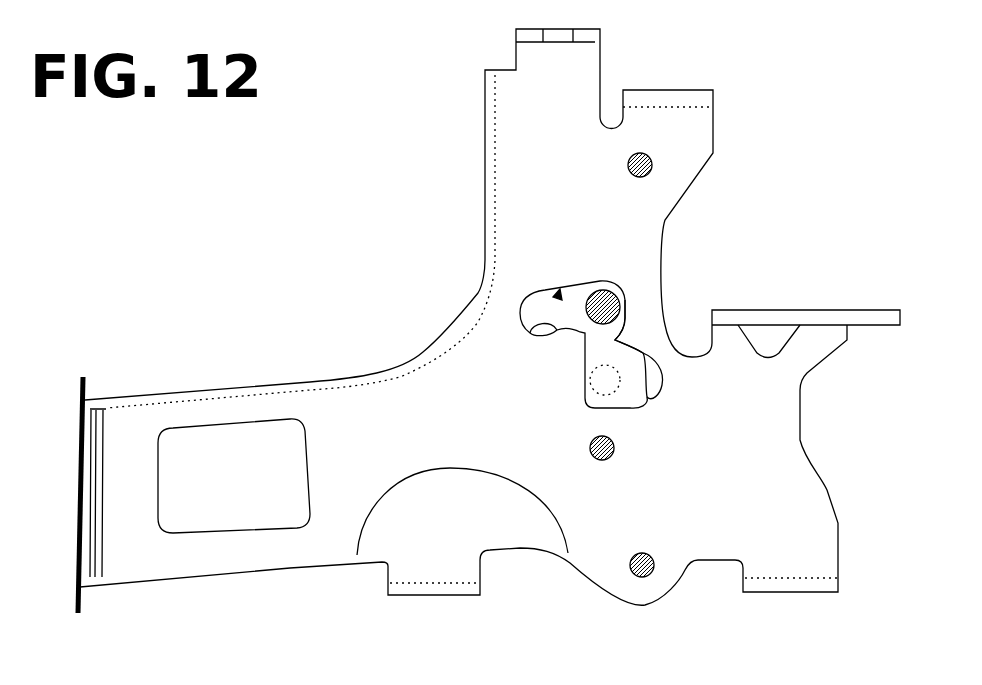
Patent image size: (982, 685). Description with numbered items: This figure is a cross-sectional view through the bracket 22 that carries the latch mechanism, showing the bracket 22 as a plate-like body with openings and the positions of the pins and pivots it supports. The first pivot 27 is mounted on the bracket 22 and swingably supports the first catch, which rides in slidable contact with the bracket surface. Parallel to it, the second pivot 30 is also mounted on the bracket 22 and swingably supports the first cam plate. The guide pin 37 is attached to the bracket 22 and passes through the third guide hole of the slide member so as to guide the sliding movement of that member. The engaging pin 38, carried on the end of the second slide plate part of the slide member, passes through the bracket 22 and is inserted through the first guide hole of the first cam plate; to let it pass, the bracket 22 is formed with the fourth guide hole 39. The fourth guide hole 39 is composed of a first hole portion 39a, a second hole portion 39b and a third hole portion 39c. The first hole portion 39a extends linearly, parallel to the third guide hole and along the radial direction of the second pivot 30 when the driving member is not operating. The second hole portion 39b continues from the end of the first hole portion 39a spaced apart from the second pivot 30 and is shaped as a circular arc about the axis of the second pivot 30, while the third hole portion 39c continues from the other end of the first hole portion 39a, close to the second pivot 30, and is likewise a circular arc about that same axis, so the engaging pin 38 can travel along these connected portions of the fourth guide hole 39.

The bracket 22 is at (312, 400).
The first pivot 27 is at (637, 575).
The second pivot 30 is at (590, 448).
The guide pin 37 is at (628, 165).
The engaging pin 38 is at (613, 290).
The fourth guide hole 39 is at (520, 317).
The first hole portion 39a is at (623, 340).
The second hole portion 39b is at (527, 340).
The third hole portion 39c is at (658, 393).